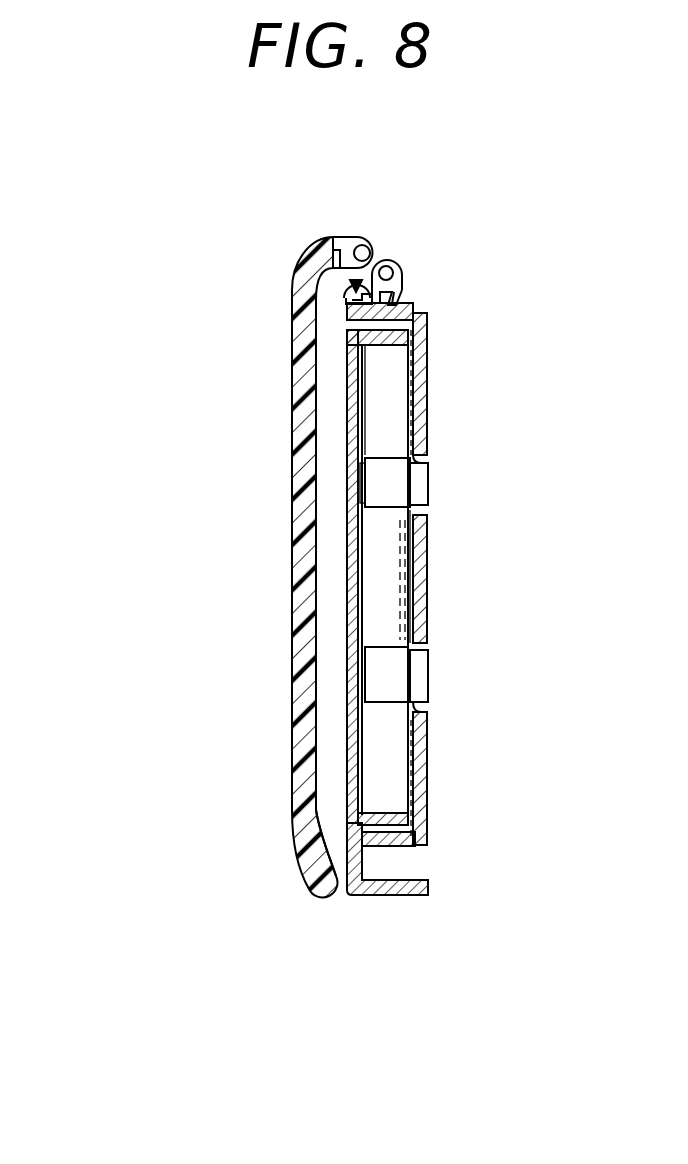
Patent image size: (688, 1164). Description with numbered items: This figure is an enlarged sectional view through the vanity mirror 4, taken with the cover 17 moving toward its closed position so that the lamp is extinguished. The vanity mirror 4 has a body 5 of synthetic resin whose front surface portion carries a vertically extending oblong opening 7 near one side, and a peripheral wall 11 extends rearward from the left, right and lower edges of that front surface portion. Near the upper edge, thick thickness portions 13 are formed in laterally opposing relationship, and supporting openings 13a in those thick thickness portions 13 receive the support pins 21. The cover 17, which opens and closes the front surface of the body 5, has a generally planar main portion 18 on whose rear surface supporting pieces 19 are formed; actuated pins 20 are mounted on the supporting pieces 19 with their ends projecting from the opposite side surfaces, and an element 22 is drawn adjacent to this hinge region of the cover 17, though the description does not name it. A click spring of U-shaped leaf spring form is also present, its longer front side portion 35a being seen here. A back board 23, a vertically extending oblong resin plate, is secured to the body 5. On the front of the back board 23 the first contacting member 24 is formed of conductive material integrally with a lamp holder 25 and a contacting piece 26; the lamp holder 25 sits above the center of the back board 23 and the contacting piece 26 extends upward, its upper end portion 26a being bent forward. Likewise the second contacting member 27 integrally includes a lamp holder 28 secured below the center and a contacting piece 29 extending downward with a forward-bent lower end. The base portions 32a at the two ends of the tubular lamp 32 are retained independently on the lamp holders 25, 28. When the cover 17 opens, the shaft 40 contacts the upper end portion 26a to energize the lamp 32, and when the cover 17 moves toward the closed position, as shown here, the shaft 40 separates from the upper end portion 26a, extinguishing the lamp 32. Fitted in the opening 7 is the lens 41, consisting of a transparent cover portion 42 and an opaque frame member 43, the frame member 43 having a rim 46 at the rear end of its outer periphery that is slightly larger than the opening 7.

The vanity mirror 4 is at (100, 232).
The body 5 is at (353, 897).
The opening 7 is at (347, 810).
The peripheral wall 11 is at (430, 889).
The thick thickness portion 13 is at (327, 297).
The supporting opening 13a is at (330, 272).
The cover 17 is at (291, 650).
The main portion 18 is at (291, 600).
The supporting piece 19 is at (393, 267).
The actuated pin 20 is at (404, 288).
The support pin 21 is at (402, 310).
The hinge portion 22 is at (346, 245).
The back board 23 is at (430, 773).
The first contacting member 24 is at (430, 428).
The lamp holder 25 is at (360, 492).
The contacting piece 26 is at (430, 402).
The upper end portion 26a is at (416, 312).
The second contacting member 27 is at (430, 752).
The lamp holder 28 is at (353, 677).
The contacting piece 29 is at (430, 797).
The tubular lamp 32 is at (398, 580).
The base portion 32a is at (400, 493).
The front side portion 35a is at (401, 300).
The shaft 40 is at (369, 250).
The lens 41 is at (192, 340).
The cover portion 42 is at (350, 356).
The frame member 43 is at (352, 380).
The rim 46 is at (390, 833).